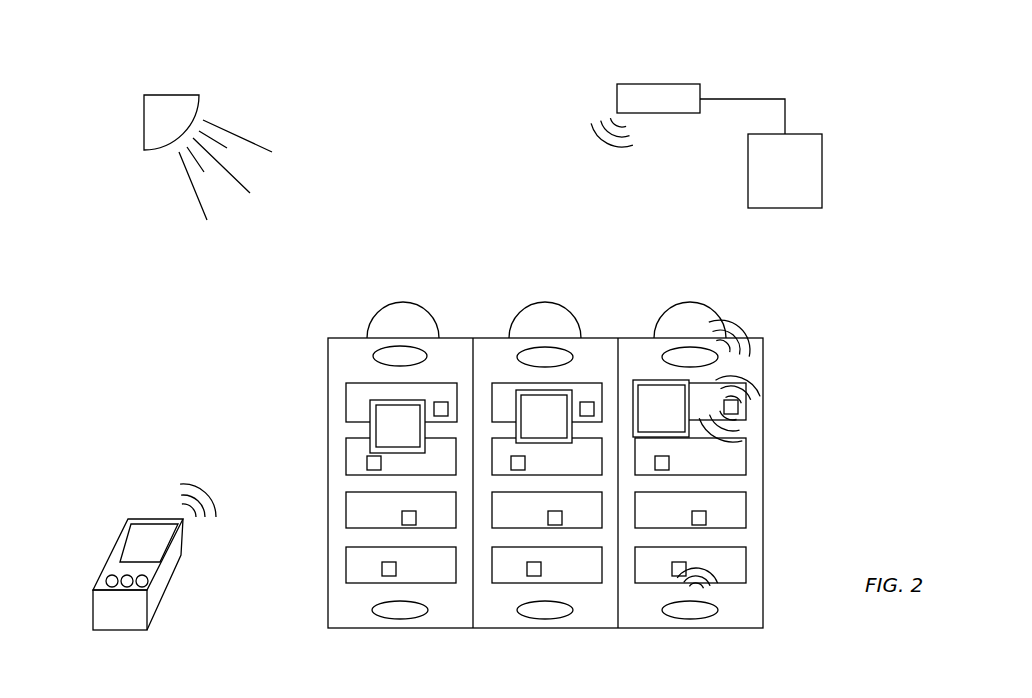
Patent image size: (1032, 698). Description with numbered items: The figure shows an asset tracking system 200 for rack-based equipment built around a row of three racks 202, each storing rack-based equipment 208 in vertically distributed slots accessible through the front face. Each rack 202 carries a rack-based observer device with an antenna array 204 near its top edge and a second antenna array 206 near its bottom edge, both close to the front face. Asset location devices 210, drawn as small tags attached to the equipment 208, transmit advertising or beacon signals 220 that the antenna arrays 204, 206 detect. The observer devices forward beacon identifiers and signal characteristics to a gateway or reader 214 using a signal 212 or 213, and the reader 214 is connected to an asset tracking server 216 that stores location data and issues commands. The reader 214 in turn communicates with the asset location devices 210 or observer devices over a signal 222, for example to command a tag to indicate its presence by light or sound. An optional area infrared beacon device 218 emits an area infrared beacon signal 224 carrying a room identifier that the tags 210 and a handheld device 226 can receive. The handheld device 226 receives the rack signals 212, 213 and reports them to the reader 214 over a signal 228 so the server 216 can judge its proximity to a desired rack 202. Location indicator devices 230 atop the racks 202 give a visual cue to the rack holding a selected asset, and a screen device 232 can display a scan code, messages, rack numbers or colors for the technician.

The system 200 is at (787, 55).
The rack 202 is at (402, 348).
The antenna array 204 is at (395, 350).
The antenna array 206 is at (390, 620).
The rack-based equipment 208 is at (345, 388).
The asset location device 210 is at (442, 402).
The signal 212 is at (728, 320).
The signal 213 is at (715, 575).
The gateway or reader 214 is at (658, 84).
The asset tracking server 216 is at (808, 133).
The area infrared beacon device 218 is at (179, 95).
The beacon signal 220 is at (717, 378).
The signal 222 is at (590, 133).
The area infrared beacon signal 224 is at (266, 135).
The handheld device 226 is at (163, 592).
The signal 228 is at (187, 483).
The location indicator device 230 is at (410, 337).
The screen device 232 is at (382, 432).